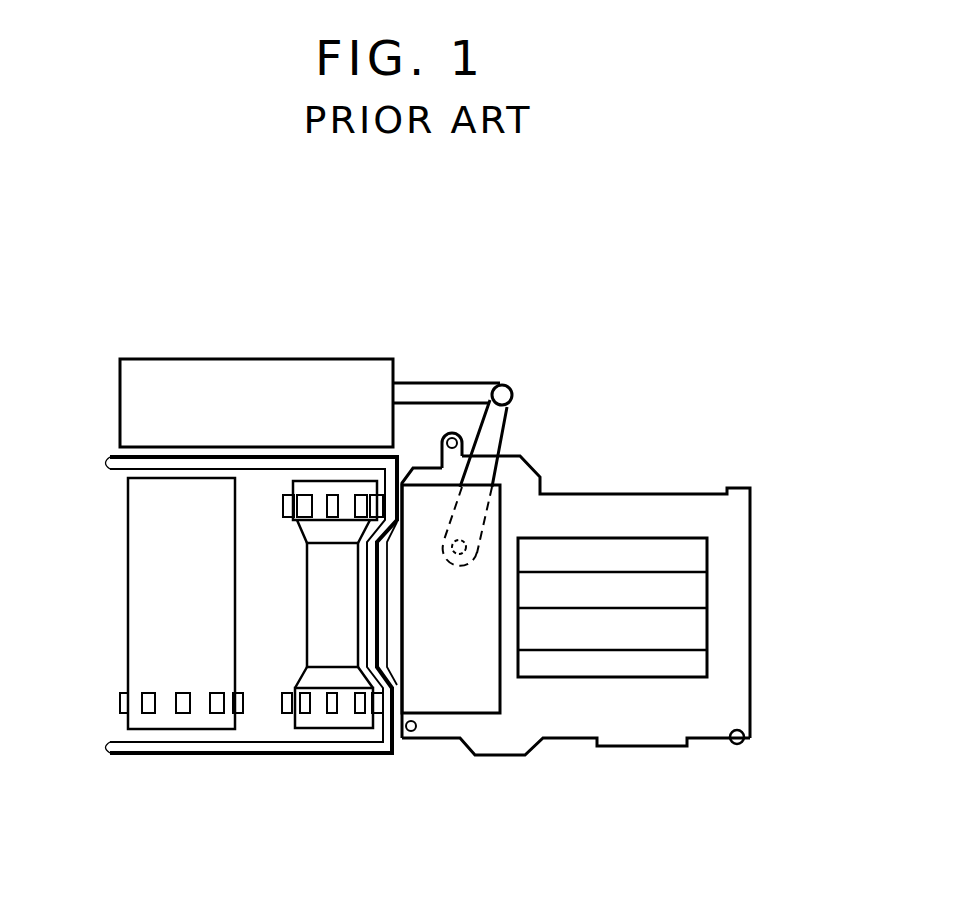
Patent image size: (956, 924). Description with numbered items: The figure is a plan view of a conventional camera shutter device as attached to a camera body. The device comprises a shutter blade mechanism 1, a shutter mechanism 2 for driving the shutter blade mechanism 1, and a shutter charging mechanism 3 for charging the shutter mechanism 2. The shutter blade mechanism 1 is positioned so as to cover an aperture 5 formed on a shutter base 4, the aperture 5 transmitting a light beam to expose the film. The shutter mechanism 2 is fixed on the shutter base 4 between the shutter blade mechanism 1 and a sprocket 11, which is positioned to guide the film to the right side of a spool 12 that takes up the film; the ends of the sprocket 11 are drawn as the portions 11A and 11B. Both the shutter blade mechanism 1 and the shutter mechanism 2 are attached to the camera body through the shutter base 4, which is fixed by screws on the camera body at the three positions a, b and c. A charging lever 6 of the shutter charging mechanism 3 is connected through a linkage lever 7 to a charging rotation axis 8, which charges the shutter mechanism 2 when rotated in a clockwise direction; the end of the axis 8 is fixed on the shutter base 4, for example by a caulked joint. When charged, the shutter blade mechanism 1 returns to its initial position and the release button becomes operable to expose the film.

The shutter blade mechanism 1 is at (645, 650).
The shutter mechanism 2 is at (456, 700).
The shutter charging mechanism 3 is at (257, 375).
The shutter base 4 is at (640, 497).
The aperture 5 is at (707, 592).
The charging lever 6 is at (432, 388).
The linkage lever 7 is at (502, 422).
The charging rotation axis 8 is at (446, 576).
The screw fixing position a is at (452, 437).
The screw fixing position b is at (411, 732).
The screw fixing position c is at (745, 737).
The sprocket 11 is at (338, 723).
The connector 11A is at (285, 516).
The connector 11B is at (282, 708).
The spool 12 is at (165, 722).